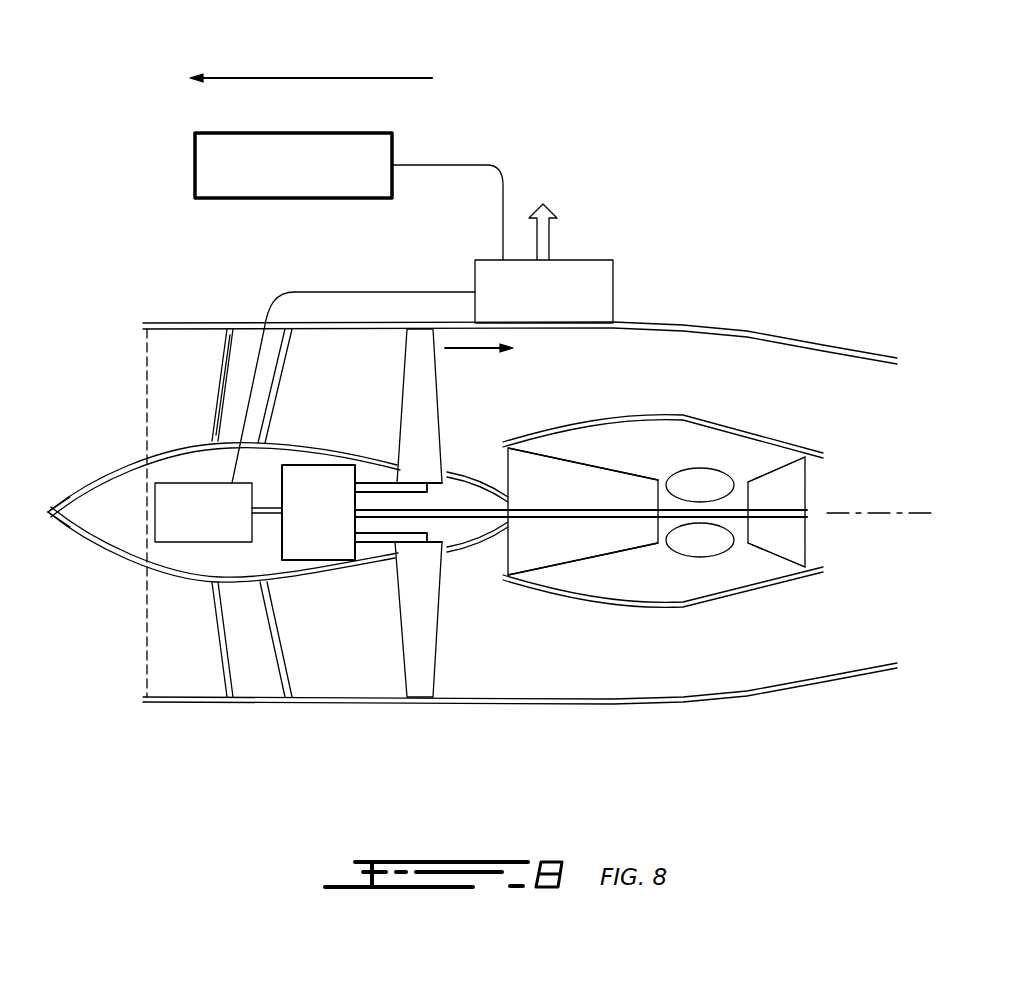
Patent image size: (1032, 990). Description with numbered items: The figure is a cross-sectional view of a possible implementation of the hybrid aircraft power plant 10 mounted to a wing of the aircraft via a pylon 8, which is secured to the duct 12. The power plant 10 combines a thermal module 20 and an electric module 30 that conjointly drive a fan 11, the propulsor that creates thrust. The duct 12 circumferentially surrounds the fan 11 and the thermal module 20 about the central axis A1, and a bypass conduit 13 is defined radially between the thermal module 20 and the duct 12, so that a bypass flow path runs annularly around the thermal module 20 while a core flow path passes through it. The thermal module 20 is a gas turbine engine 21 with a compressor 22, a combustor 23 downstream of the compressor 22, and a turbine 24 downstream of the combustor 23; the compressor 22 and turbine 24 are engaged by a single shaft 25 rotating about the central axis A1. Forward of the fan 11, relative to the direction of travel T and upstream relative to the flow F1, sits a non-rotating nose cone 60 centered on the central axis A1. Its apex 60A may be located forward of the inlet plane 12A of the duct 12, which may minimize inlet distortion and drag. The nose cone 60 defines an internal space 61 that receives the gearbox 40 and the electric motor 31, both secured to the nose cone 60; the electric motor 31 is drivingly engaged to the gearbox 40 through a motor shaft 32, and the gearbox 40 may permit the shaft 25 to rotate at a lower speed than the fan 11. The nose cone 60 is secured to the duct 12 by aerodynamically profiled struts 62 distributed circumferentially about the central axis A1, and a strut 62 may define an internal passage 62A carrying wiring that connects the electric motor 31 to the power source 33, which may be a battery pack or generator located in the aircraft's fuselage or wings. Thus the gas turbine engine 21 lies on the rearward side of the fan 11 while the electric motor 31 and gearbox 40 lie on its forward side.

The direction of travel T is at (335, 77).
The power source 33 is at (195, 161).
The aircraft power plant 10 is at (706, 217).
The pylon 8 is at (594, 273).
The electric module 30 is at (305, 352).
The duct 12 is at (643, 708).
The inlet plane 12A is at (148, 653).
The nose cone 60 is at (112, 566).
The apex 60A is at (45, 514).
The internal space 61 is at (122, 531).
The struts 62 is at (212, 379).
The internal passage 62A is at (247, 355).
The electric motor 31 is at (180, 483).
The motor shaft 32 is at (260, 514).
The gearbox 40 is at (318, 588).
The fan 11 is at (418, 381).
The flow F1 is at (473, 351).
The bypass conduit 13 is at (637, 376).
The thermal module 20 is at (797, 396).
The gas turbine engine 21 is at (665, 395).
The compressor 22 is at (563, 547).
The combustor 23 is at (685, 541).
The turbine 24 is at (779, 537).
The shaft 25 is at (738, 510).
The central axis A1 is at (877, 520).